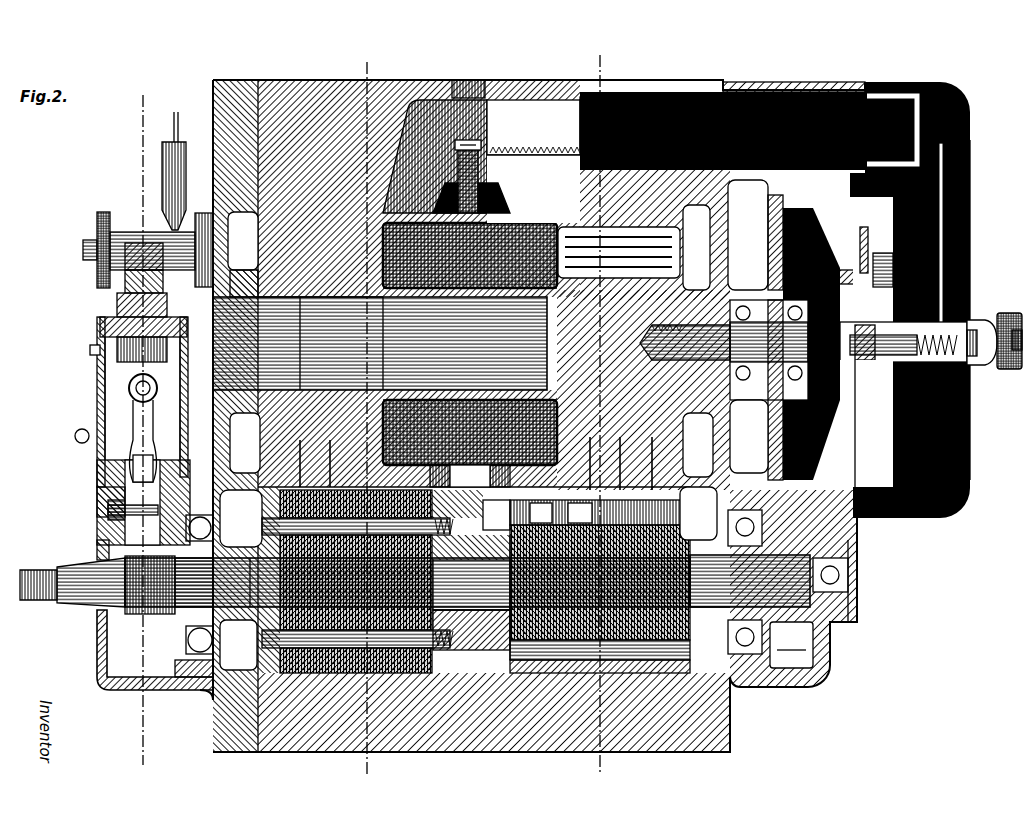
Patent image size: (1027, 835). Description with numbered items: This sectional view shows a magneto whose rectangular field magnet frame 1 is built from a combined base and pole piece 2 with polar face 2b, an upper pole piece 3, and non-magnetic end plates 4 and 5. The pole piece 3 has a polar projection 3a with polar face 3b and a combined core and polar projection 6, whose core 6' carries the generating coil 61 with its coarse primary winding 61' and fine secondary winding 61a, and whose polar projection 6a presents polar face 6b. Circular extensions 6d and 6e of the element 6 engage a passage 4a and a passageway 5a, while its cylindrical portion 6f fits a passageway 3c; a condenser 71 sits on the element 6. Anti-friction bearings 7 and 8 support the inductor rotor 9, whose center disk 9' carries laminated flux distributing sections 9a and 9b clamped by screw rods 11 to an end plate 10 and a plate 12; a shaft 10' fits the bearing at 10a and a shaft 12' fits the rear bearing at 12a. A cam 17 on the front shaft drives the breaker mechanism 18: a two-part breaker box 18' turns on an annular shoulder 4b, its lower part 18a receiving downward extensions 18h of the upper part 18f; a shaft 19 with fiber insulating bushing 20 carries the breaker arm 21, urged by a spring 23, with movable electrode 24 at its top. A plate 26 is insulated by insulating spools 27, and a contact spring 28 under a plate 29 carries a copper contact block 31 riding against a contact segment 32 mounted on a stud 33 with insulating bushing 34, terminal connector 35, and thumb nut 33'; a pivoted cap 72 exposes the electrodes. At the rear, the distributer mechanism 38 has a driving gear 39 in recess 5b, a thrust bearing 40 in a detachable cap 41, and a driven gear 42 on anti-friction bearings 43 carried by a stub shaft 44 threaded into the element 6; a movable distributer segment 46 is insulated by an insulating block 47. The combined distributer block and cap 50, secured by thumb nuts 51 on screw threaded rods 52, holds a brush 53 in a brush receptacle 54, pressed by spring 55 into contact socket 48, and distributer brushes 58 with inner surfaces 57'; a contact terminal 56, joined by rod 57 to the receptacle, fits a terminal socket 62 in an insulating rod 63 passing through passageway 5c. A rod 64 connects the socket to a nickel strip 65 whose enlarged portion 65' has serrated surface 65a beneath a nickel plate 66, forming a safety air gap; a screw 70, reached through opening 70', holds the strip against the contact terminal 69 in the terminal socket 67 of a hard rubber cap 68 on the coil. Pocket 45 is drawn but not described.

The rectangular field magnet frame 1 is at (228, 416).
The combined base and pole piece 2 is at (495, 752).
The polar face 2b is at (352, 767).
The upper pole piece 3 is at (305, 80).
The polar projection 3a is at (256, 426).
The polar face 3b is at (272, 472).
The passageway 3c is at (325, 296).
The end plate 4 is at (213, 742).
The passage 4a is at (243, 290).
The annular shoulder 4b is at (178, 666).
The end plate 5 is at (702, 80).
The passageway 5a is at (698, 445).
The recess 5b is at (800, 688).
The passageway 5c is at (838, 90).
The combined core and polar projection 6 is at (548, 392).
The core 6' is at (470, 311).
The polar projection 6a is at (600, 570).
The polar face 6b is at (476, 481).
The circular extension 6d is at (300, 347).
The circular extension 6e is at (692, 290).
The cylindrical portion 6f is at (358, 343).
The anti-friction bearing 7 is at (188, 636).
The anti-friction bearing 8 is at (735, 638).
The inductor rotor 9 is at (384, 580).
The flux distributing section 9a is at (471, 605).
The center disk 9' is at (471, 601).
The flux distributing section 9b is at (506, 585).
The end plate 10 is at (326, 581).
The shaft portion 10a is at (407, 582).
The shaft 10' is at (238, 582).
The screw rods 11 is at (262, 527).
The plate 12 is at (698, 513).
The shaft portion 12a is at (750, 581).
The shaft 12' is at (710, 622).
The cam 17 is at (140, 614).
The circuit opening and closing mechanism 18 is at (105, 462).
The lower part of breaker box 18a is at (97, 641).
The upper part of breaker box 18f is at (97, 446).
The downward extensions 18h is at (108, 516).
The two-part breaker box 18' is at (96, 499).
The shaft 19 is at (108, 507).
The fiber insulating bushing 20 is at (97, 549).
The breaker arm 21 is at (154, 422).
The spring 23 is at (150, 456).
The movable electrode 24 is at (134, 397).
The plate 26 is at (130, 363).
The insulating spools 27 is at (100, 342).
The contact spring 28 is at (100, 324).
The plate 29 is at (167, 306).
The copper contact block 31 is at (163, 281).
The contact segment 32 is at (140, 243).
The stud 33 is at (71, 261).
The thumb nut 33' is at (107, 234).
The insulating bushing 34 is at (118, 232).
The terminal connector 35 is at (172, 176).
The distributer mechanism 38 is at (811, 342).
The driving gear 39 is at (815, 650).
The thrust bearing 40 is at (850, 576).
The detachable cap 41 is at (852, 612).
The driven gear 42 is at (770, 215).
The anti-friction bearings 43 is at (766, 300).
The stub shaft 44 is at (724, 350).
The pocket 45 is at (749, 436).
The movable distributer segment 46 is at (865, 238).
The insulating block 47 is at (873, 298).
The contact socket 48 is at (862, 363).
The combined distributer block and cap 50 is at (972, 262).
The thumb nuts 51 is at (1000, 328).
The screw threaded rod 52 is at (1009, 370).
The brush 53 is at (864, 367).
The brush receptacle 54 is at (985, 366).
The spring 55 is at (978, 360).
The contact terminal 56 is at (959, 128).
The rod 57 is at (931, 300).
The inner surface 57' is at (863, 423).
The distributer brushes 58 is at (884, 262).
The generating coil 61 is at (470, 443).
The secondary winding 61a is at (540, 232).
The primary winding 61' is at (470, 350).
The terminal socket 62 is at (890, 96).
The insulating rod 63 is at (790, 92).
The rod 64 is at (618, 136).
The nickel strip 65 is at (533, 189).
The enlarged portion 65' is at (533, 127).
The serrated surface 65a is at (587, 123).
The nickel plate 66 is at (443, 156).
The terminal socket 67 is at (438, 197).
The hard rubber cap 68 is at (503, 198).
The contact terminal 69 is at (480, 181).
The screw 70 is at (454, 145).
The opening 70' is at (468, 77).
The condenser 71 is at (606, 229).
The pivoted cap 72 is at (92, 354).